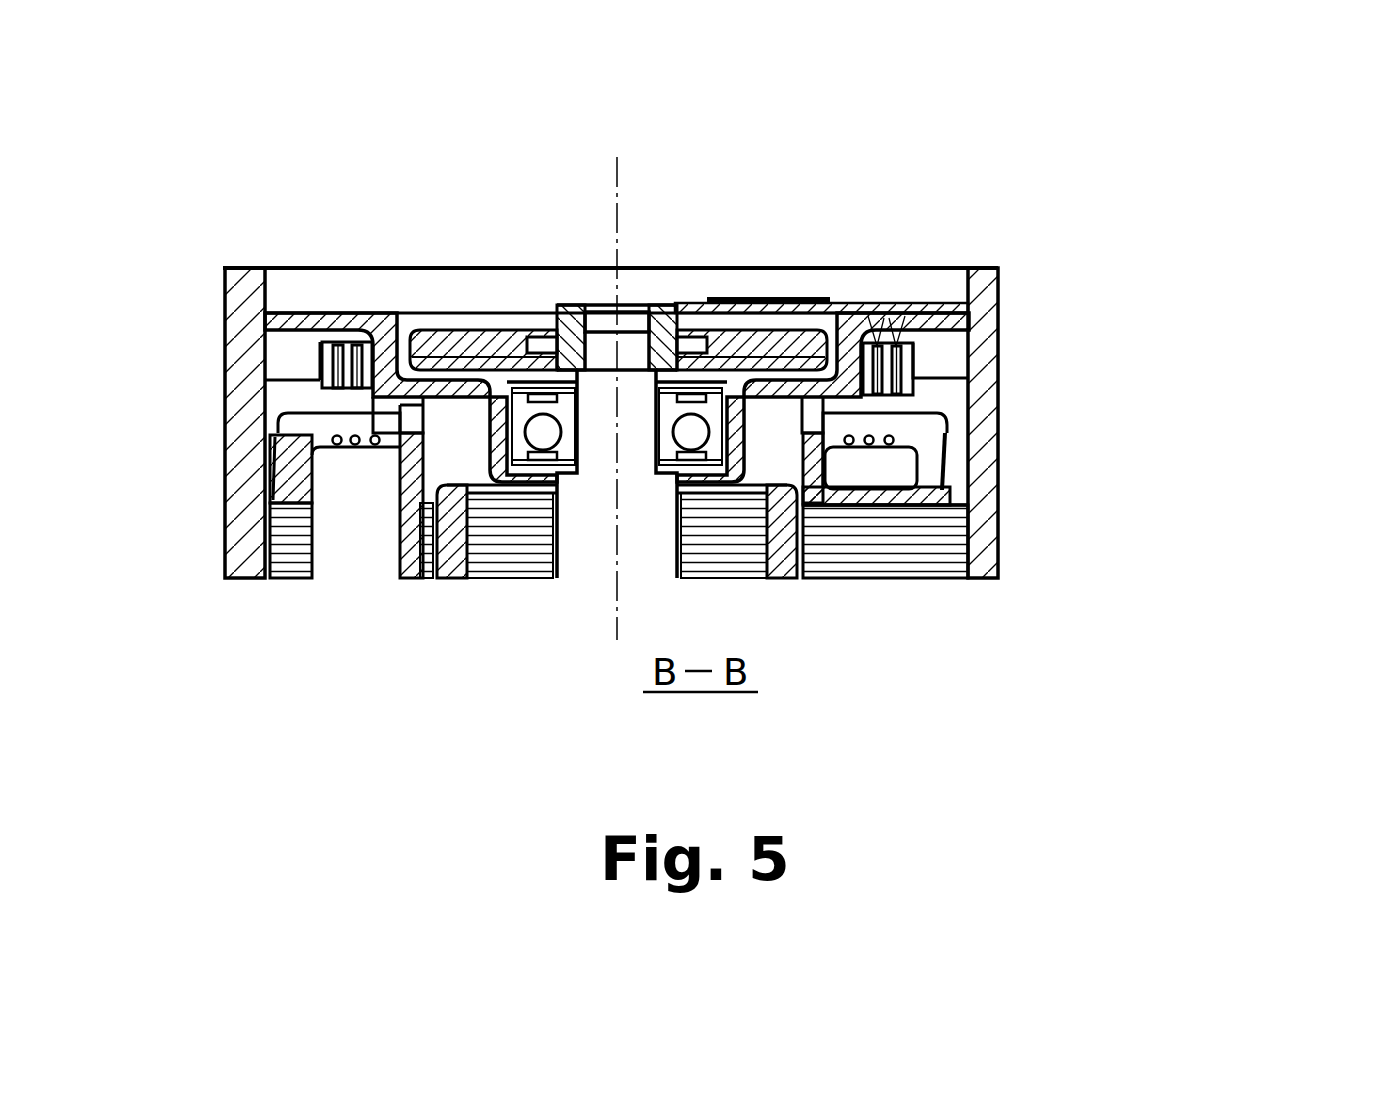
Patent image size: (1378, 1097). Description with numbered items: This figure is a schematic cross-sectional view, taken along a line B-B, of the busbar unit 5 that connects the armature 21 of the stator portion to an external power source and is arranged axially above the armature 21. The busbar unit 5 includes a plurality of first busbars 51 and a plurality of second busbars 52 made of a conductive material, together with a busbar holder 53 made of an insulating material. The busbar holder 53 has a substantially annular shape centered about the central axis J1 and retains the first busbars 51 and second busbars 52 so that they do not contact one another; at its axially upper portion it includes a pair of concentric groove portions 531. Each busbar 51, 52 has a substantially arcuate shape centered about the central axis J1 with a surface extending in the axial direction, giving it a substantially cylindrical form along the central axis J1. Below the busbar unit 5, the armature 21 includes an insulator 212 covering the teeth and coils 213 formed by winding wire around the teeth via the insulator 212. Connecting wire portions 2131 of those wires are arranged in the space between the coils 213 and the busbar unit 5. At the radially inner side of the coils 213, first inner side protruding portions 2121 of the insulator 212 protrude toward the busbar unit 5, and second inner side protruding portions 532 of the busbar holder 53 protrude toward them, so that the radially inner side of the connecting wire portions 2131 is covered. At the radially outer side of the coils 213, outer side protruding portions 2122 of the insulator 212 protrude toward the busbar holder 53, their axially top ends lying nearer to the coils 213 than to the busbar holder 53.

The busbar unit 5 is at (1122, 289).
The first busbar 51 is at (322, 360).
The second busbar 52 is at (975, 302).
The busbar holder 53 is at (970, 370).
The groove portion 531 is at (878, 342).
The second inner side protruding portion 532 is at (410, 400).
The armature 21 is at (1243, 433).
The insulator 212 is at (1192, 482).
The first inner side protruding portion 2121 is at (415, 445).
The outer side protruding portion 2122 is at (880, 465).
The coil 213 is at (330, 476).
The connecting wire portion 2131 is at (330, 404).
The central axis J1 is at (622, 192).